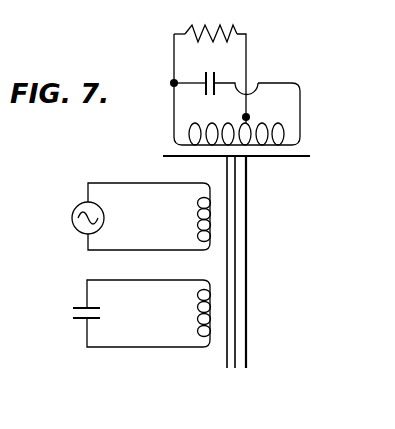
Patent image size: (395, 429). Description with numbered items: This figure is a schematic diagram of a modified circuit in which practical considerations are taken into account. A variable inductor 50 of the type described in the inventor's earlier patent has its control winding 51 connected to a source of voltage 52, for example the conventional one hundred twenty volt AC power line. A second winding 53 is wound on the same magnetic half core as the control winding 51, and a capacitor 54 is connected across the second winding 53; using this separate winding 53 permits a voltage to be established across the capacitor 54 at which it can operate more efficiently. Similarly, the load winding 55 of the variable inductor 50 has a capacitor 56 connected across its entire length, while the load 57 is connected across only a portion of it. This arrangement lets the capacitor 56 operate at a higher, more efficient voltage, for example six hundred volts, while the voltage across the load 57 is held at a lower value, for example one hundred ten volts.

The variable inductor 50 is at (264, 180).
The control winding 51 is at (198, 213).
The source of voltage 52 is at (83, 232).
The second winding 53 is at (195, 308).
The capacitor 54 is at (75, 318).
The load winding 55 is at (283, 130).
The capacitor 56 is at (215, 72).
The load 57 is at (230, 25).